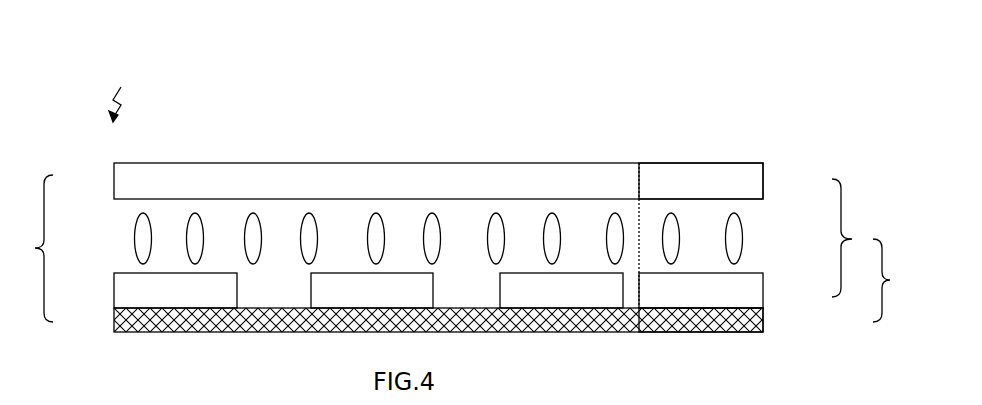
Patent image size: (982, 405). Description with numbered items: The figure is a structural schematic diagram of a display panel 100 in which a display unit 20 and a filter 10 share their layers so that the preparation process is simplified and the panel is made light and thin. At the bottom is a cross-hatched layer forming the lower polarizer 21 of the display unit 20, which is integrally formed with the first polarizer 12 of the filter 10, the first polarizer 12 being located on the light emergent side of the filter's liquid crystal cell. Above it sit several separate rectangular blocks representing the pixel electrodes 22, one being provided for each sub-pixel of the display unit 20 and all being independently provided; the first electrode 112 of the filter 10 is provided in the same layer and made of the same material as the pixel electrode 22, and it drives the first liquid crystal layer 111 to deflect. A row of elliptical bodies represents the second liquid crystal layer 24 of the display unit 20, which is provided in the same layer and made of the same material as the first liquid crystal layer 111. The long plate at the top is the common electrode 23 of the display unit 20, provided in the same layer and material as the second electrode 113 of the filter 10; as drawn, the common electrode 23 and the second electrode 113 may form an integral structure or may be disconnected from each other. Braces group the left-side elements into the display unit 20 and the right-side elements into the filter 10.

The display panel 100 is at (116, 93).
The filter 10 is at (872, 250).
The first polarizer 12 is at (737, 323).
The first liquid crystal layer 111 is at (733, 239).
The first electrode 112 is at (737, 297).
The second electrode 113 is at (742, 178).
The display unit 20 is at (35, 248).
The lower polarizer 21 is at (132, 321).
The pixel electrode 22 is at (132, 294).
The common electrode 23 is at (132, 175).
The second liquid crystal layer 24 is at (140, 236).